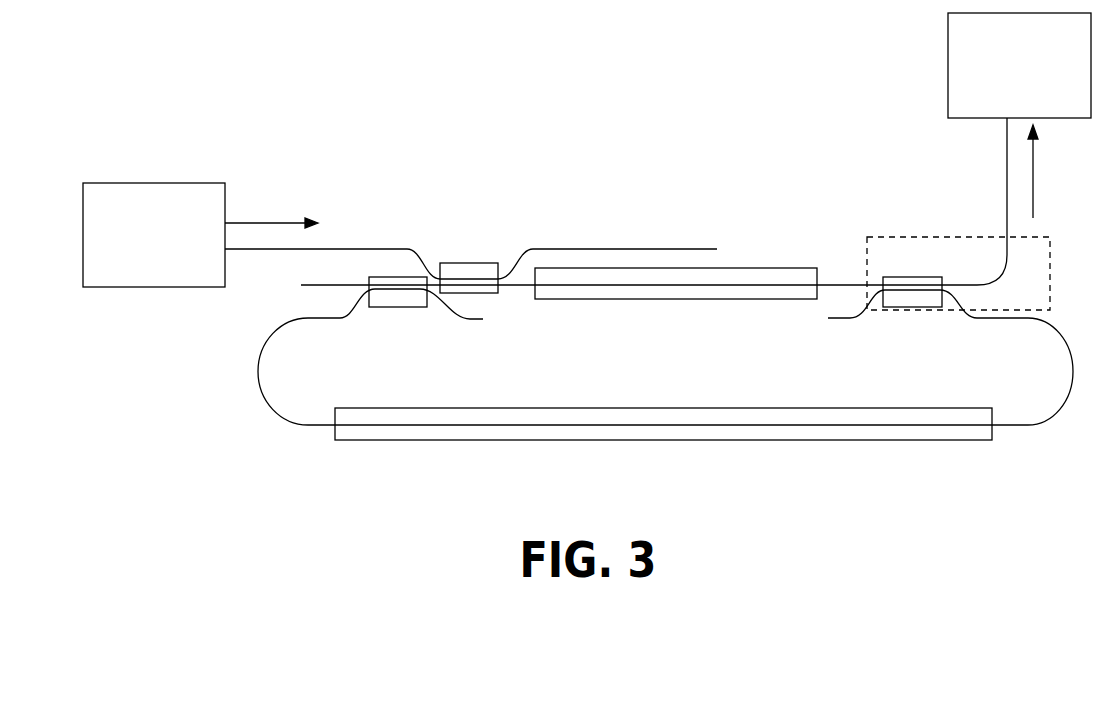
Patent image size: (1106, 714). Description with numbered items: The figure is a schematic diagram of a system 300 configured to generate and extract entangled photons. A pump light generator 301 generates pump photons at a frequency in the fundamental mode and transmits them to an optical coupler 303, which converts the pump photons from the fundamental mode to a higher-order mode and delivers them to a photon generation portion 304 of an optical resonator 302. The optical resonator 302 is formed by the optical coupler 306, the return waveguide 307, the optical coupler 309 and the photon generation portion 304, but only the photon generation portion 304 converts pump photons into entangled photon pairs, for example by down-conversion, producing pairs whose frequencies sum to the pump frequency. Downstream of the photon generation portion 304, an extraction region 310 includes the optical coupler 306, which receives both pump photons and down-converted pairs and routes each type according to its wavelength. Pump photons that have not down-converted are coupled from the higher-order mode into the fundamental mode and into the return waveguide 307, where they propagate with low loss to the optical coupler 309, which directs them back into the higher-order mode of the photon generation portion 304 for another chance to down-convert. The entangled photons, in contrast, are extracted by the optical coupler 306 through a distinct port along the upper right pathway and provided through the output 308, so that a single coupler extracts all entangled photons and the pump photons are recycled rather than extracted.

The system 300 is at (380, 95).
The pump light generator 301 is at (154, 235).
The optical resonator 302 is at (640, 197).
The optical coupler 303 is at (467, 263).
The photon generation portion 304 is at (650, 300).
The optical coupler 306 is at (903, 277).
The return waveguide 307 is at (440, 440).
The output 308 is at (1019, 115).
The optical coupler 309 is at (384, 307).
The extraction region 310 is at (865, 253).